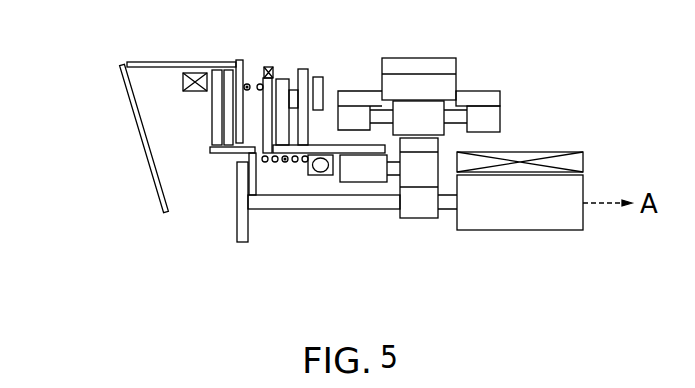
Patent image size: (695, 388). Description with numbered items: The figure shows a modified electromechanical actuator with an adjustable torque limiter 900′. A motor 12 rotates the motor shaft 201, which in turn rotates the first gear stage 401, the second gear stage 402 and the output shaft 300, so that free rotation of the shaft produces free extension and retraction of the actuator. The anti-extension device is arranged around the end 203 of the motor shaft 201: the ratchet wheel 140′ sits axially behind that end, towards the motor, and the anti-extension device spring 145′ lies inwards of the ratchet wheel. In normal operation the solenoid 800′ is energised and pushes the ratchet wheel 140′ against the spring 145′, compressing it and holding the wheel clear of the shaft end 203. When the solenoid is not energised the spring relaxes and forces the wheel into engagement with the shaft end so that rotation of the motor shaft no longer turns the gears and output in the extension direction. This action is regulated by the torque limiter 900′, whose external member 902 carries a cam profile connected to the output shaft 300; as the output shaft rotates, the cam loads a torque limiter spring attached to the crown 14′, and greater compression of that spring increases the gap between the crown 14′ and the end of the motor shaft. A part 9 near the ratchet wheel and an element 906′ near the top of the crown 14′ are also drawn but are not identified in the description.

The torque limiter 900′ is at (125, 117).
The external member 902 is at (150, 167).
The solenoid 800′ is at (197, 91).
The crown 14′ is at (240, 63).
The sensor unit 906′ is at (248, 84).
The ratchet wheel 140′ is at (240, 158).
The support bracket 9 is at (249, 177).
The end of the motor shaft 203 is at (243, 230).
The anti-extension device spring 145′ is at (285, 163).
The motor shaft 201 is at (342, 210).
The motor 12 is at (507, 231).
The output shaft 300 is at (430, 58).
The second gear stage 402 is at (500, 97).
The first gear stage 401 is at (500, 118).